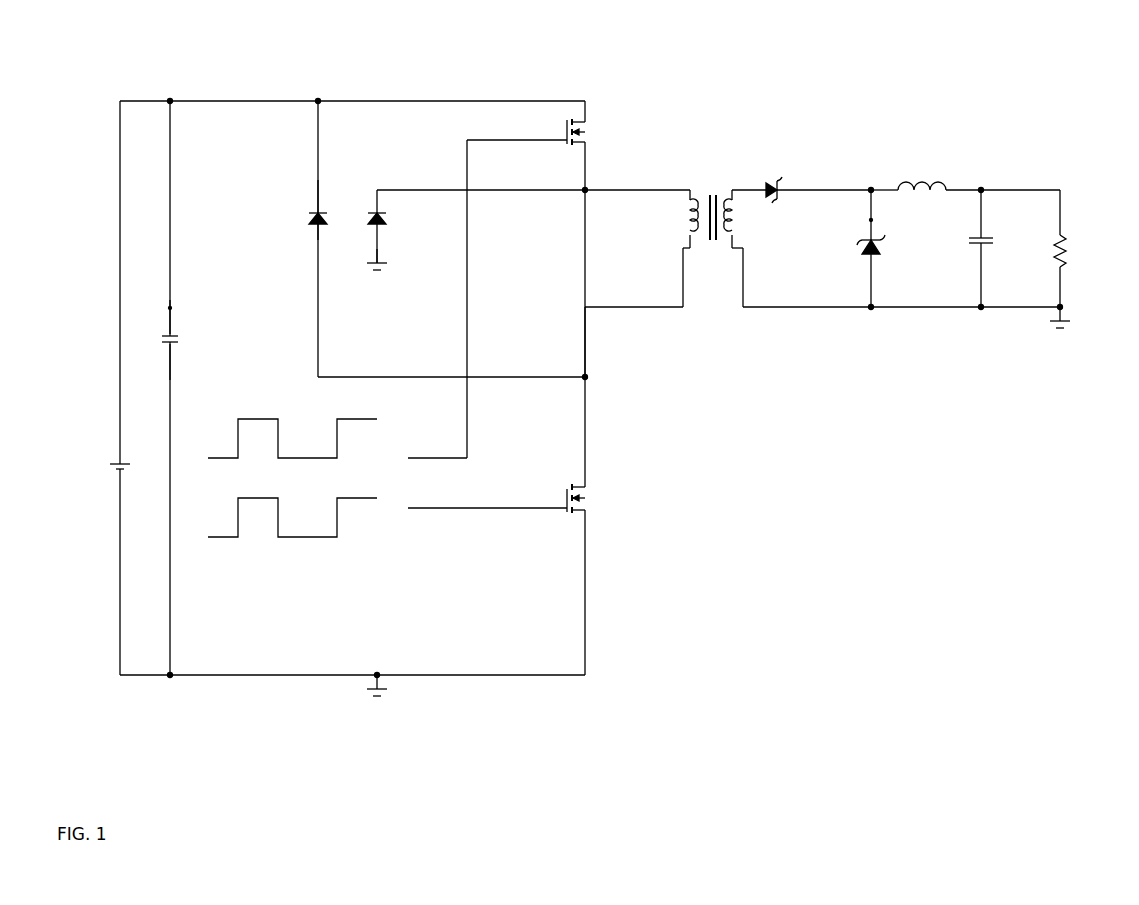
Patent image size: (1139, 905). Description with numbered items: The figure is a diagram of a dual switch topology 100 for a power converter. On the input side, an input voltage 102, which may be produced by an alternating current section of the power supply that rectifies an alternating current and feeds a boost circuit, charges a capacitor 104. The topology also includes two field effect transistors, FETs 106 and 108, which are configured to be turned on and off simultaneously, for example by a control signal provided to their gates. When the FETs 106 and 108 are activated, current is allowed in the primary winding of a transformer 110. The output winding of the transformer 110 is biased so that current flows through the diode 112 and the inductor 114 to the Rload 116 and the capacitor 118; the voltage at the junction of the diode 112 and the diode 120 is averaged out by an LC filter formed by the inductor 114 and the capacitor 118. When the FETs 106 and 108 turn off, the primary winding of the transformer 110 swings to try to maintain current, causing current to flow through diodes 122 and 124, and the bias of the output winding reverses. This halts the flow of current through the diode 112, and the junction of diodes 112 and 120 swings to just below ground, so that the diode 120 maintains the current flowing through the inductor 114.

The dual switch topology 100 is at (284, 80).
The input voltage 102 is at (98, 476).
The capacitor 104 is at (232, 345).
The field effect transistor 106 is at (636, 497).
The field effect transistor 108 is at (636, 130).
The transformer 110 is at (721, 161).
The diode 112 is at (789, 161).
The inductor 114 is at (936, 161).
The Rload 116 is at (1118, 249).
The capacitor 118 is at (958, 234).
The diode 120 is at (844, 244).
The diode 122 is at (438, 227).
The diode 124 is at (299, 220).